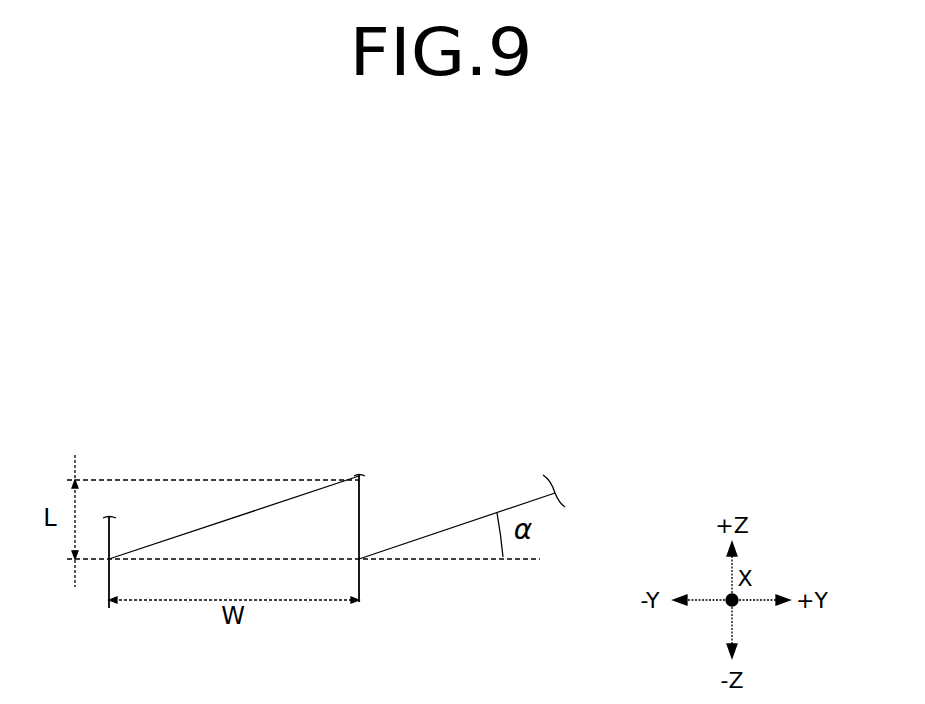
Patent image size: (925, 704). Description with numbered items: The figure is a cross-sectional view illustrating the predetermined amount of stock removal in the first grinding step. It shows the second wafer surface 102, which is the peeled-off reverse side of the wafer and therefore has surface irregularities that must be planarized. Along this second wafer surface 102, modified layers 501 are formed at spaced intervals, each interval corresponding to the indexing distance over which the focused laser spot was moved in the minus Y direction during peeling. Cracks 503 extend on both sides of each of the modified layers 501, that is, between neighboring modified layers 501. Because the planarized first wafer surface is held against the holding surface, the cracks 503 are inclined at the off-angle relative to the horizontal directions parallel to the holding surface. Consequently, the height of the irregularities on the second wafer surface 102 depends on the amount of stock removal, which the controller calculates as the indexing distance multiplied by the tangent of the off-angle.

The second wafer surface 102 is at (505, 365).
The modified layer 501 is at (109, 559).
The crack 503 is at (228, 520).